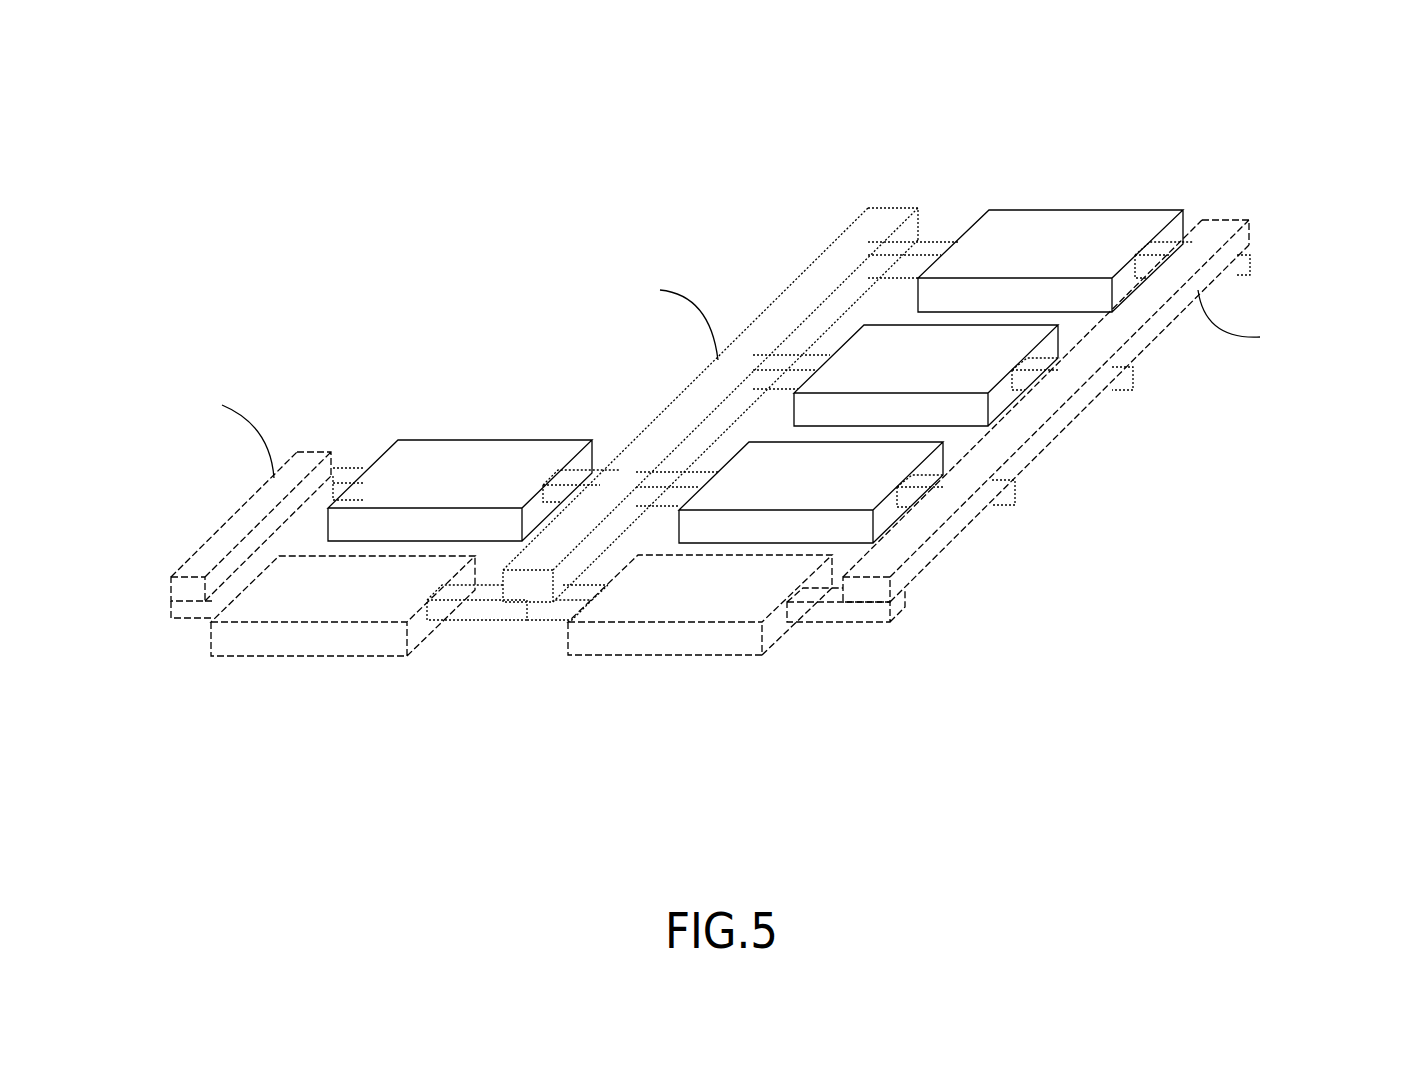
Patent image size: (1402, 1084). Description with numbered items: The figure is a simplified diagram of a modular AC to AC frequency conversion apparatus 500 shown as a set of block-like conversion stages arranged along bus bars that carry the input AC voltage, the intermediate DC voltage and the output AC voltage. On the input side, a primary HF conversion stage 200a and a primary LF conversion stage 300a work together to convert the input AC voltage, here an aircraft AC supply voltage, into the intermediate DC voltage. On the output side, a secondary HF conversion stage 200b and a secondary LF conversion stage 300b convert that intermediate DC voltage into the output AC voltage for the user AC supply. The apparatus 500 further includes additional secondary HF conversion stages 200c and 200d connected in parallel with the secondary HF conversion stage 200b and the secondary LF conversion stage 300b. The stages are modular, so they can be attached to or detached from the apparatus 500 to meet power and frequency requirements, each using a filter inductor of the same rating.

The modular AC to AC frequency conversion apparatus 500 is at (276, 88).
The primary HF conversion stage 200a is at (487, 438).
The secondary HF conversion stage 200b is at (877, 508).
The additional secondary HF conversion stage 200c is at (995, 393).
The additional secondary HF conversion stage 200d is at (1075, 208).
The primary LF conversion stage 300a is at (318, 657).
The secondary LF conversion stage 300b is at (673, 655).